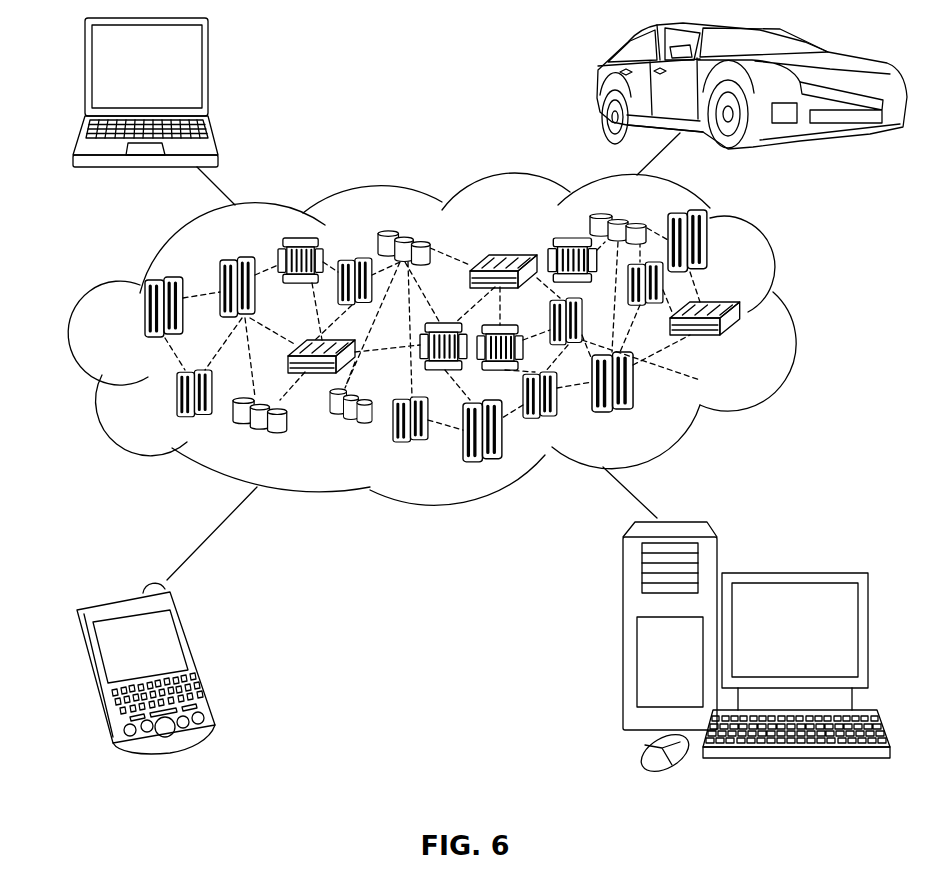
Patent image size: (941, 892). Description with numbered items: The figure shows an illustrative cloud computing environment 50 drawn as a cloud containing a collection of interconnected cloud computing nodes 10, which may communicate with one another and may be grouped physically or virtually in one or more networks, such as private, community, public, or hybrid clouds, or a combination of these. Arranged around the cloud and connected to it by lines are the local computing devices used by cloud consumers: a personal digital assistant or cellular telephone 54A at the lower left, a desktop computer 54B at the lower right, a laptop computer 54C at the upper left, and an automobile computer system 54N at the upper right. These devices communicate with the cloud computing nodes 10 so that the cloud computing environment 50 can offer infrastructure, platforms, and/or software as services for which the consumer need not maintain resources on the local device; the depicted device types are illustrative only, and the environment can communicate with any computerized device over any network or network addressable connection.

The laptop computer 54C is at (208, 72).
The automobile computer system 54N is at (598, 88).
The personal digital assistant (PDA) or cellular telephone 54A is at (197, 660).
The desktop computer 54B is at (792, 573).
The cloud computing environment 50 is at (795, 318).
The cloud computing nodes 10 is at (745, 345).